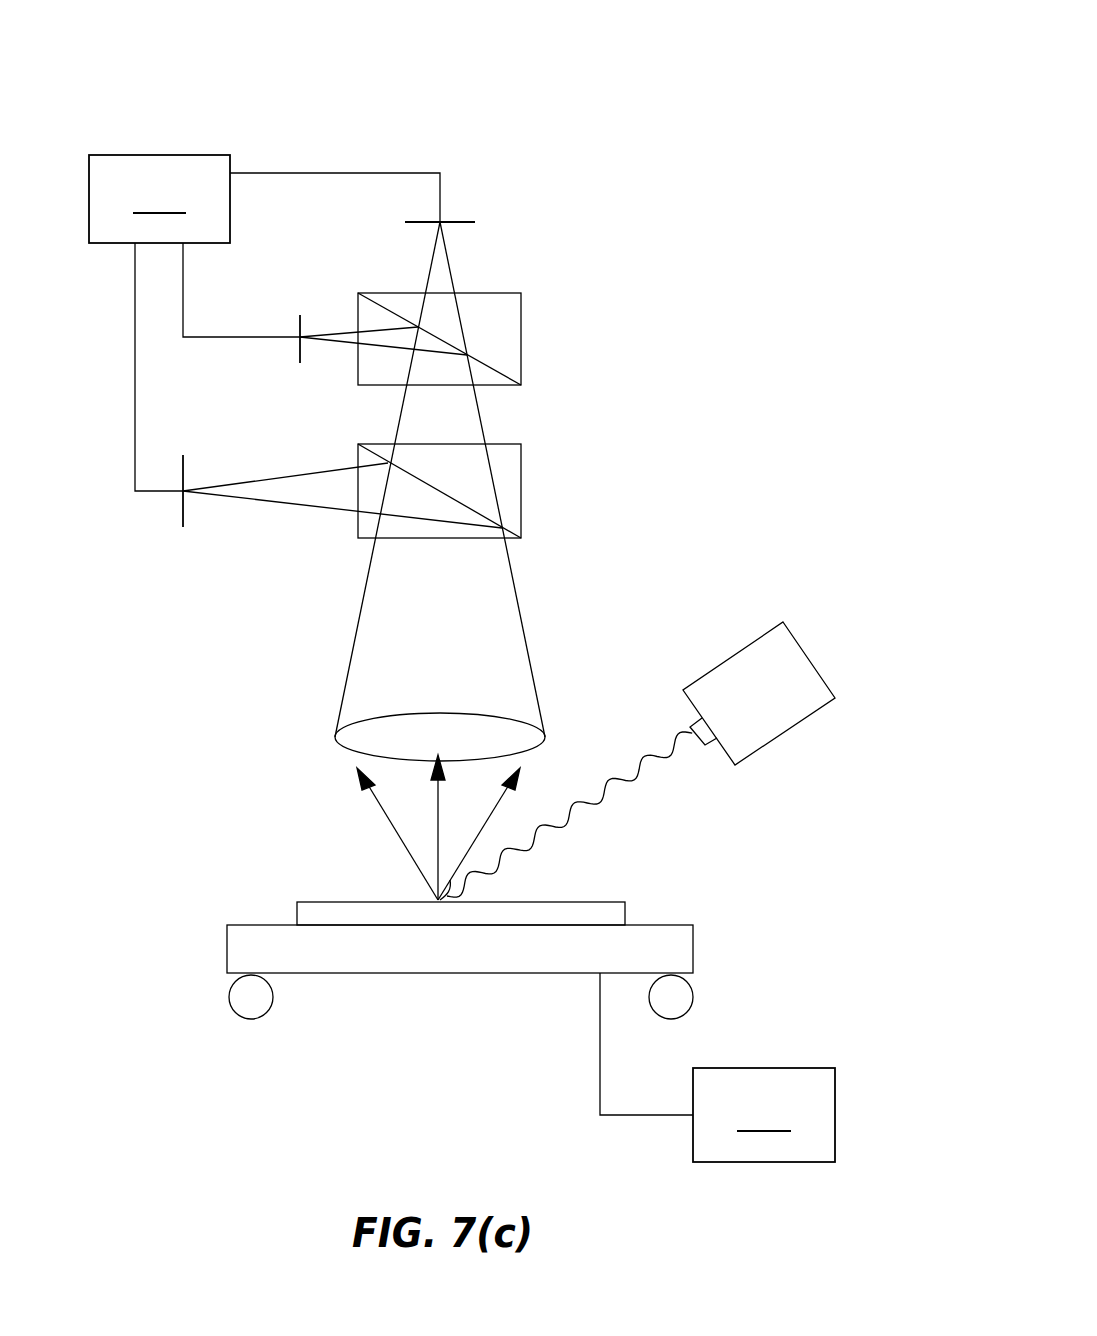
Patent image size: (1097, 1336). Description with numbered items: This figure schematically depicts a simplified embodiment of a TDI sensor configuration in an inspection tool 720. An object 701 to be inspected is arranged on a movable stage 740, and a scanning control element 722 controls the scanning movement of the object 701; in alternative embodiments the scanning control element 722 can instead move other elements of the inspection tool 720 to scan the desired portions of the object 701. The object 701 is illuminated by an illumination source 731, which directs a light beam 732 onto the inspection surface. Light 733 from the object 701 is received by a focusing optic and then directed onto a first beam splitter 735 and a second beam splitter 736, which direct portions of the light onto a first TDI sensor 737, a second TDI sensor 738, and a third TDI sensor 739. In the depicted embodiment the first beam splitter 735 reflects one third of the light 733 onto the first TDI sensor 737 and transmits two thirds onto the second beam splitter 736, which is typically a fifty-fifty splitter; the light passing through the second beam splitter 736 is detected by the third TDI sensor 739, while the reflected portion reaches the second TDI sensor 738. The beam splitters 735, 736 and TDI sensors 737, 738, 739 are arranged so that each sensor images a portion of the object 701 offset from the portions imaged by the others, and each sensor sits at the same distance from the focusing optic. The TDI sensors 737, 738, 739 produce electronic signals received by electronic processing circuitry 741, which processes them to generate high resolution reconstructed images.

The inspection tool 720 is at (711, 135).
The electronic processing circuitry 741 is at (264, 323).
The third TDI sensor 739 is at (463, 222).
The second TDI sensor 738 is at (300, 322).
The first TDI sensor 737 is at (185, 512).
The second beam splitter 736 is at (521, 323).
The first beam splitter 735 is at (521, 473).
The light 733 is at (503, 617).
The light beam 732 is at (600, 786).
The illumination source 731 is at (825, 678).
The object 701 is at (628, 912).
The movable stage 740 is at (697, 951).
The scanning control element 722 is at (717, 1067).